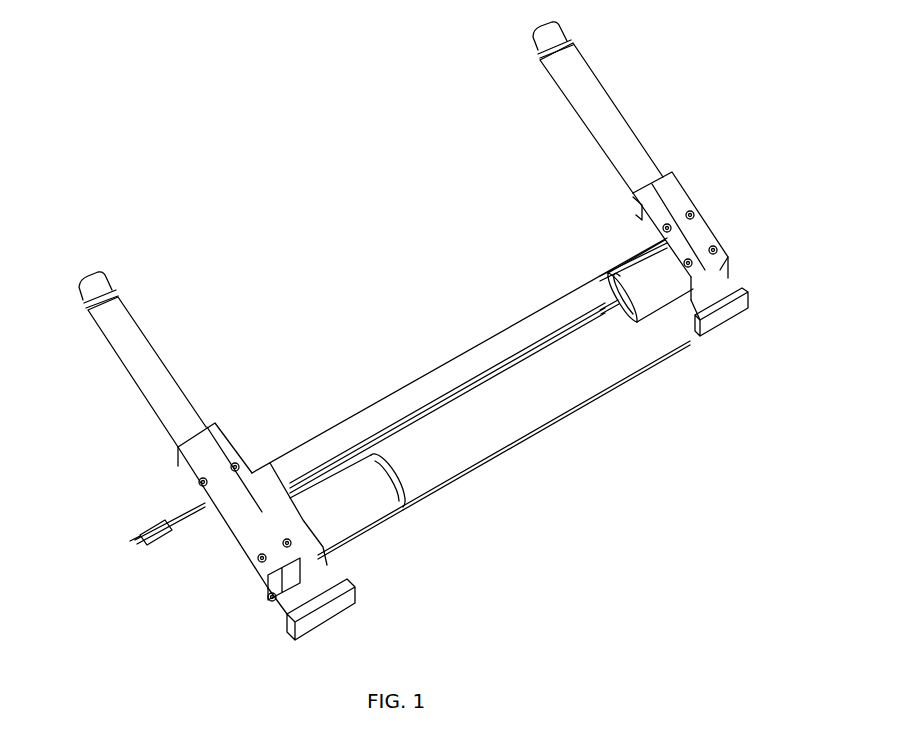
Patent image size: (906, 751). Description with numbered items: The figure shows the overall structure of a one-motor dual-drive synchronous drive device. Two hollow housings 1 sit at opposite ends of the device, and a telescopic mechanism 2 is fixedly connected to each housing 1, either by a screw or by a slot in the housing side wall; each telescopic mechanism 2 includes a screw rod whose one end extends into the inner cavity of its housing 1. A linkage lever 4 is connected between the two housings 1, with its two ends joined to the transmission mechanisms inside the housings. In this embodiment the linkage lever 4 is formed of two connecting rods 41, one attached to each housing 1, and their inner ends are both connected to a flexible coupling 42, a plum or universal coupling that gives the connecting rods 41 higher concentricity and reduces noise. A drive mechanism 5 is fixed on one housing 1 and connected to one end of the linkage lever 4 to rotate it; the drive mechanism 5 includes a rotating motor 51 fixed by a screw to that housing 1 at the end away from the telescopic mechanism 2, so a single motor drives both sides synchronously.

The hollow housing 1 is at (248, 527).
The telescopic mechanism 2 is at (152, 372).
The linkage lever 4 is at (553, 387).
The drive mechanism 5 is at (413, 538).
The connecting rod 41 is at (440, 405).
The flexible coupling 42 is at (650, 273).
The rotating motor 51 is at (350, 515).